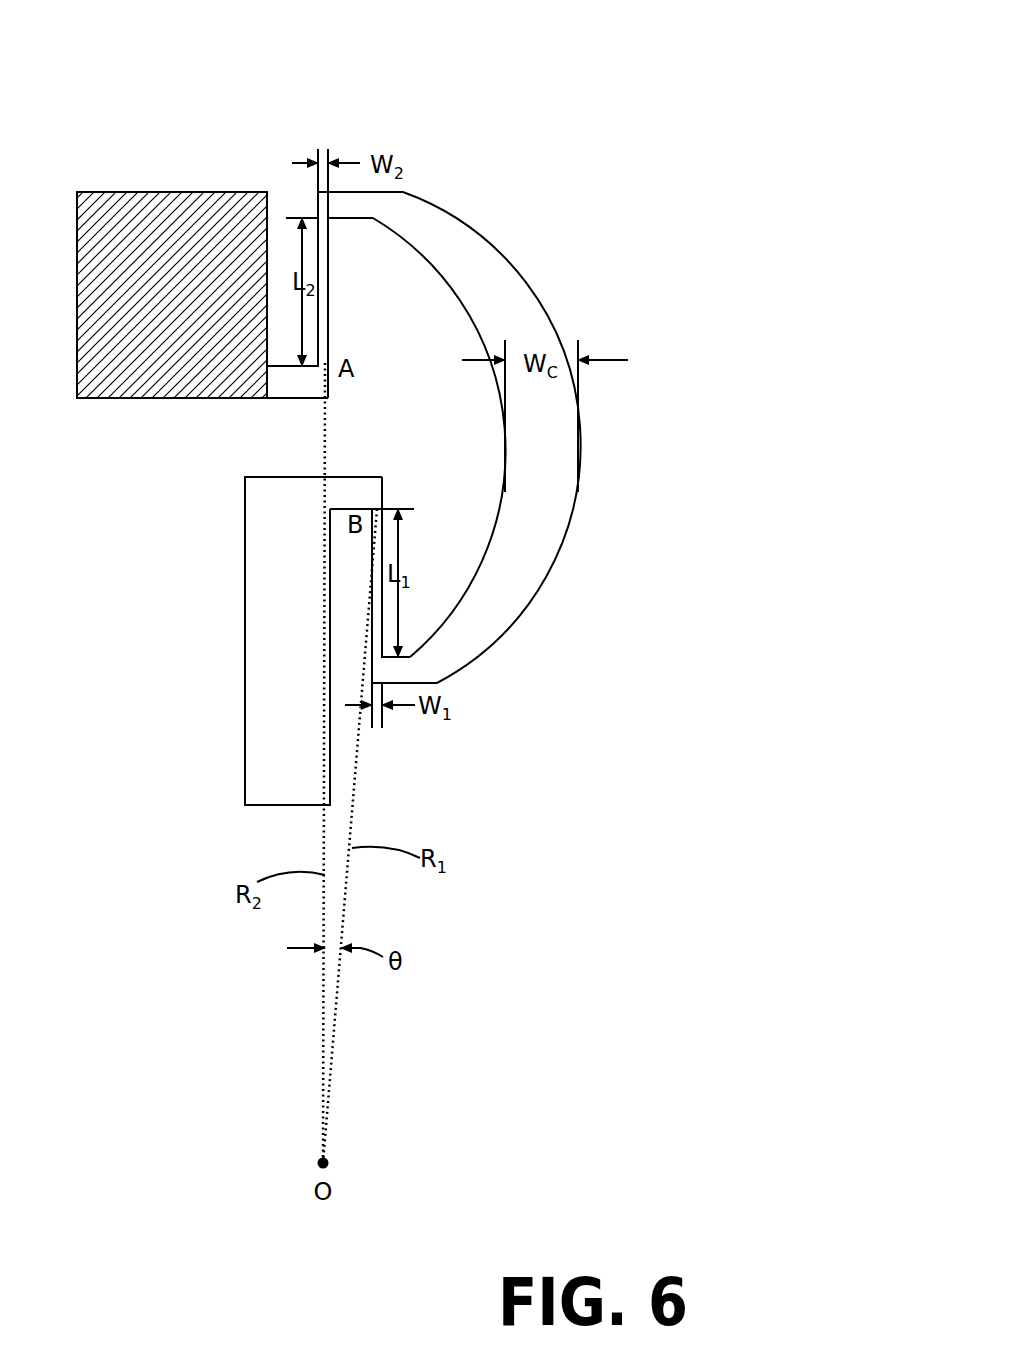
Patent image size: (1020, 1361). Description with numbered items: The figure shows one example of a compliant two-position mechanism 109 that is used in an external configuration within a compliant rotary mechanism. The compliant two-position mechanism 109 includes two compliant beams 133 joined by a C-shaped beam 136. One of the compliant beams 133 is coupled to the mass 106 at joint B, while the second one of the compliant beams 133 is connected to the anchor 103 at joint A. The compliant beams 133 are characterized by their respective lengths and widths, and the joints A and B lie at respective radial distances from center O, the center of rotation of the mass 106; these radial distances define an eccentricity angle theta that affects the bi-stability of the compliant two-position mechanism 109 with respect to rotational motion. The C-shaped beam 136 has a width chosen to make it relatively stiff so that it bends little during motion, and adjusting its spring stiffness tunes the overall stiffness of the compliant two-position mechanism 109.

The anchor 103 is at (188, 210).
The mass 106 is at (268, 731).
The compliant two-position mechanism 109 is at (560, 123).
The compliant beams 133 is at (331, 315).
The C-shaped beam 136 is at (498, 282).